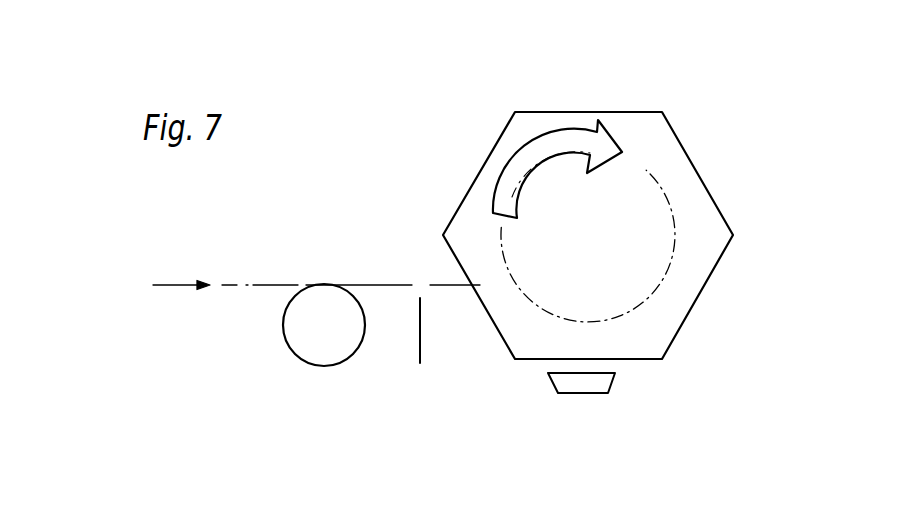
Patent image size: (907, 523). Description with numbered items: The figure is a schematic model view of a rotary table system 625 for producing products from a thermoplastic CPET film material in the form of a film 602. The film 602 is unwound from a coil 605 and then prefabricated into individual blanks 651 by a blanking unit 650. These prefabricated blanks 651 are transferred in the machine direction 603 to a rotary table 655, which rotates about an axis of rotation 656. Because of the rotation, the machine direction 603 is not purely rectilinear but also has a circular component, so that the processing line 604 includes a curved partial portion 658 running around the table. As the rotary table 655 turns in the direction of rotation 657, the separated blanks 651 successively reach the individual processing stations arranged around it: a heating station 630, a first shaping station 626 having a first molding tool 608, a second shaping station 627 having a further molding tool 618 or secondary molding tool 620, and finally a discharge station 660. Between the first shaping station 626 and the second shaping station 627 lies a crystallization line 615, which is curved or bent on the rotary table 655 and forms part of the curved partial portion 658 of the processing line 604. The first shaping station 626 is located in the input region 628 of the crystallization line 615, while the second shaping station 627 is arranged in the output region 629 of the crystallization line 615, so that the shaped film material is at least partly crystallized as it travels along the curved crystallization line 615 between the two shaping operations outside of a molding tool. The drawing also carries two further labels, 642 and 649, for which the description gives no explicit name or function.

The film 602 is at (371, 283).
The machine direction 603 is at (173, 283).
The processing line 604 is at (260, 283).
The coil 605 is at (293, 325).
The first molding tool 608 is at (623, 114).
The crystallization line 615 is at (678, 176).
The further molding tool 618 is at (700, 277).
The secondary molding tool 620 is at (683, 290).
The rotary table system 625 is at (307, 110).
The first shaping station 626 is at (600, 98).
The second shaping station 627 is at (734, 312).
The input region 628 is at (666, 161).
The output region 629 is at (716, 259).
The heating station 630 is at (485, 172).
The drain 642 is at (588, 395).
The top wall 649 is at (587, 122).
The blanking unit 650 is at (417, 333).
The blanks 651 is at (452, 288).
The rotary table 655 is at (597, 315).
The axis of rotation 656 is at (586, 237).
The direction of rotation 657 is at (533, 148).
The curved partial portion 658 is at (678, 228).
The discharge station 660 is at (602, 352).